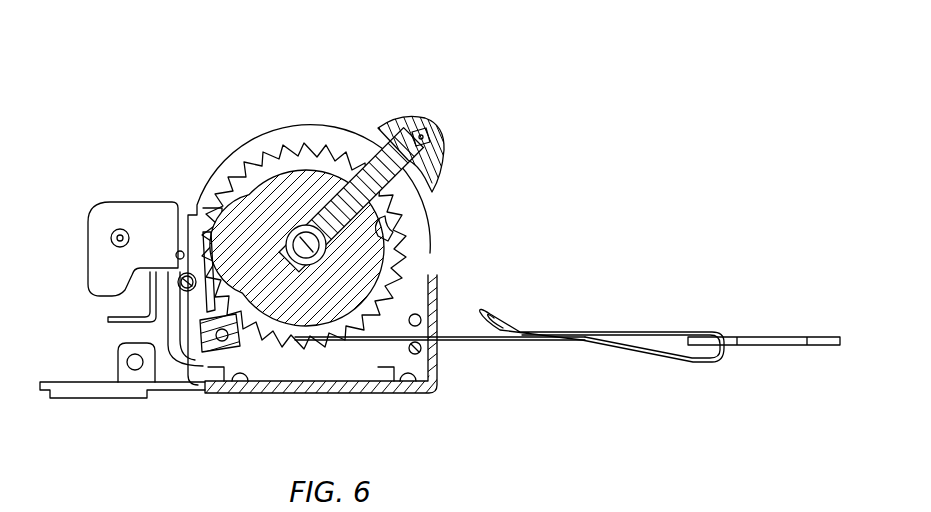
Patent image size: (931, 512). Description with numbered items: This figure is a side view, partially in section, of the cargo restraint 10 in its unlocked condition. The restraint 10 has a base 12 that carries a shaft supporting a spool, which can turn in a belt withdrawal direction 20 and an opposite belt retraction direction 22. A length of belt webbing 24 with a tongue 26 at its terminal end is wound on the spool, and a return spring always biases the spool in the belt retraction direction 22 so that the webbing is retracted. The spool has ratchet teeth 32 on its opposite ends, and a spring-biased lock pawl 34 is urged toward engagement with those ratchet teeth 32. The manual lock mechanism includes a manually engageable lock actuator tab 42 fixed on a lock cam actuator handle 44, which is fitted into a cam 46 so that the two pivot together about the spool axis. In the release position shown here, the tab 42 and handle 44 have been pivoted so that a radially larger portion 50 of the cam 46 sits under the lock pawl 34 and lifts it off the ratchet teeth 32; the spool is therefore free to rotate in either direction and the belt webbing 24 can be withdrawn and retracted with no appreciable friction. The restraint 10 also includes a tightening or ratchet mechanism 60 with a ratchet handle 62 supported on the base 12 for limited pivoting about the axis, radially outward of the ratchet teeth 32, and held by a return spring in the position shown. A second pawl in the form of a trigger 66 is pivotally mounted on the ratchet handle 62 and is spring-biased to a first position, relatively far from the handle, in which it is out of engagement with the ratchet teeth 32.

The cargo restraint 10 is at (165, 440).
The base 12 is at (300, 393).
The belt withdrawal direction 20 is at (234, 128).
The belt retraction direction 22 is at (326, 100).
The belt webbing 24 is at (658, 352).
The tongue 26 is at (782, 345).
The ratchet teeth 32 is at (415, 253).
The lock pawl 34 is at (212, 282).
The lock actuator tab 42 is at (430, 158).
The lock cam actuator handle 44 is at (393, 160).
The cam 46 is at (395, 225).
The radially larger portion of the cam 50 is at (230, 215).
The ratchet mechanism 60 is at (92, 205).
The ratchet handle 62 is at (90, 240).
The trigger 66 is at (108, 317).